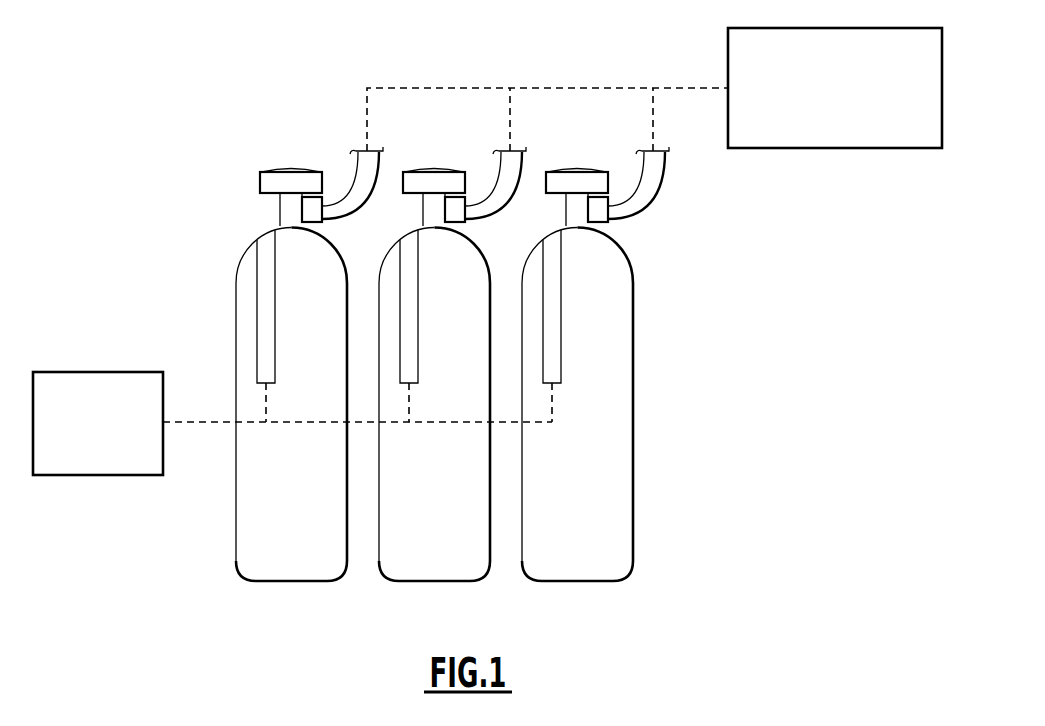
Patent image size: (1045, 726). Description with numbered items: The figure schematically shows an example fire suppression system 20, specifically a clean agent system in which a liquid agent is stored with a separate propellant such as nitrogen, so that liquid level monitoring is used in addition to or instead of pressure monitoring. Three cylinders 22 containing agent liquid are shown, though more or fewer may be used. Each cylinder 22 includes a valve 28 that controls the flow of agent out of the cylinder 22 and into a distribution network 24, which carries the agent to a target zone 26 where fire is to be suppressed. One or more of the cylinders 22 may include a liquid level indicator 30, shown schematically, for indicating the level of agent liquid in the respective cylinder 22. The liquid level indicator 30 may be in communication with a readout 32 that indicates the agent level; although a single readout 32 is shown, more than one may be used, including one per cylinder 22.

The fire suppression system 20 is at (136, 195).
The cylinder 22 is at (272, 563).
The distribution network 24 is at (467, 66).
The target zone 26 is at (799, 148).
The valve 28 is at (309, 212).
The liquid level indicator 30 is at (265, 320).
The readout 32 is at (77, 475).